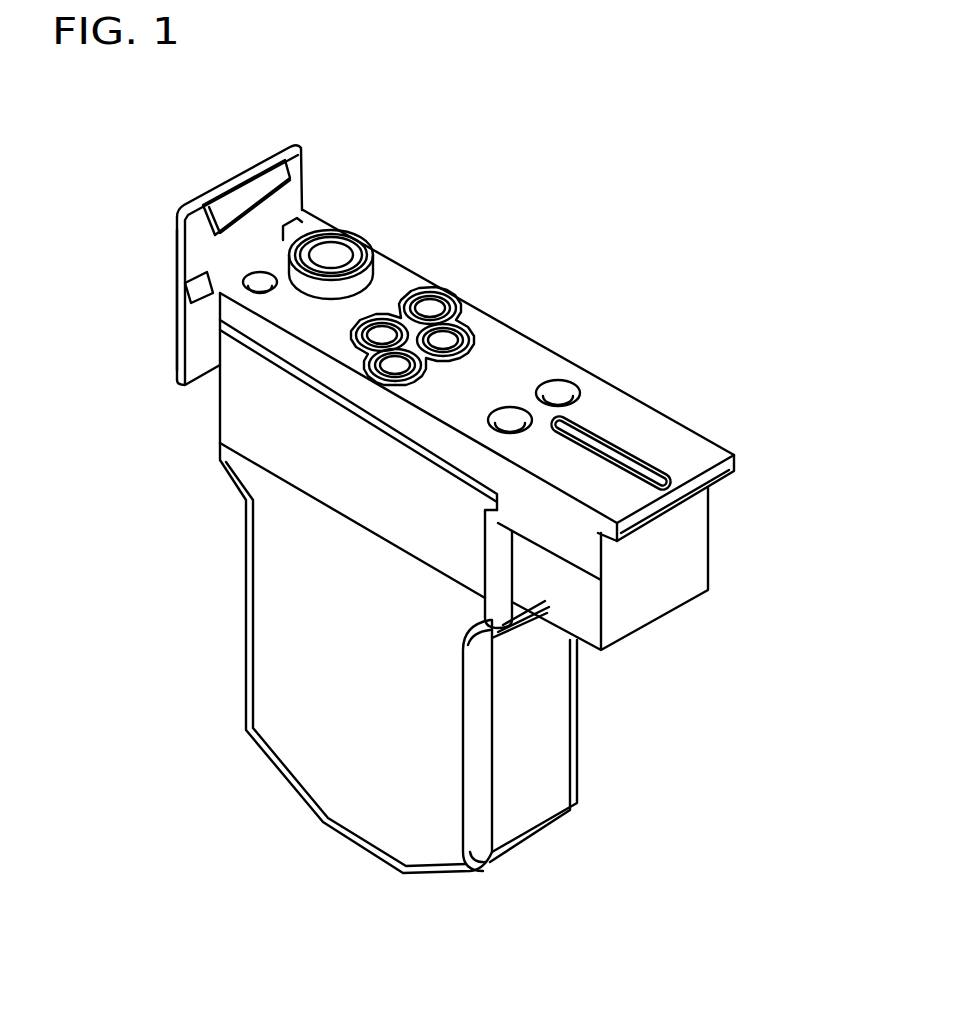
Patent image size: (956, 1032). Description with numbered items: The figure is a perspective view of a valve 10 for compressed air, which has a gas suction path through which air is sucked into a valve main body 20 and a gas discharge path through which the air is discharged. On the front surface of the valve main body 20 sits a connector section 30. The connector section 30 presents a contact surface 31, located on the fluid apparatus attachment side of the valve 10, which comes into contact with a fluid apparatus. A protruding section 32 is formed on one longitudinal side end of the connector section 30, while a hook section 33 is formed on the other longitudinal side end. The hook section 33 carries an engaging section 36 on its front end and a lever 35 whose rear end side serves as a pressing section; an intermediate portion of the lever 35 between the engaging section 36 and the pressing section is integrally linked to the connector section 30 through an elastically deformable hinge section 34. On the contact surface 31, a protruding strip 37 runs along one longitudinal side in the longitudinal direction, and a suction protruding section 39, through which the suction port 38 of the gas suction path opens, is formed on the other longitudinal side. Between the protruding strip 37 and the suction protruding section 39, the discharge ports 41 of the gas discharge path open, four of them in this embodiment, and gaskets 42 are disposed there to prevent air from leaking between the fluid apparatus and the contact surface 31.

The valve 10 is at (167, 578).
The valve main body 20 is at (293, 660).
The connector section 30 is at (557, 318).
The contact surface 31 is at (520, 362).
The protruding section 32 is at (761, 467).
The hook section 33 is at (185, 181).
The hinge section 34 is at (180, 297).
The lever 35 is at (177, 245).
The engaging section 36 is at (277, 185).
The protruding strip 37 is at (615, 440).
The suction port 38 is at (331, 262).
The suction protruding section 39 is at (365, 256).
The discharge ports 41 is at (428, 310).
The gaskets 42 is at (458, 322).